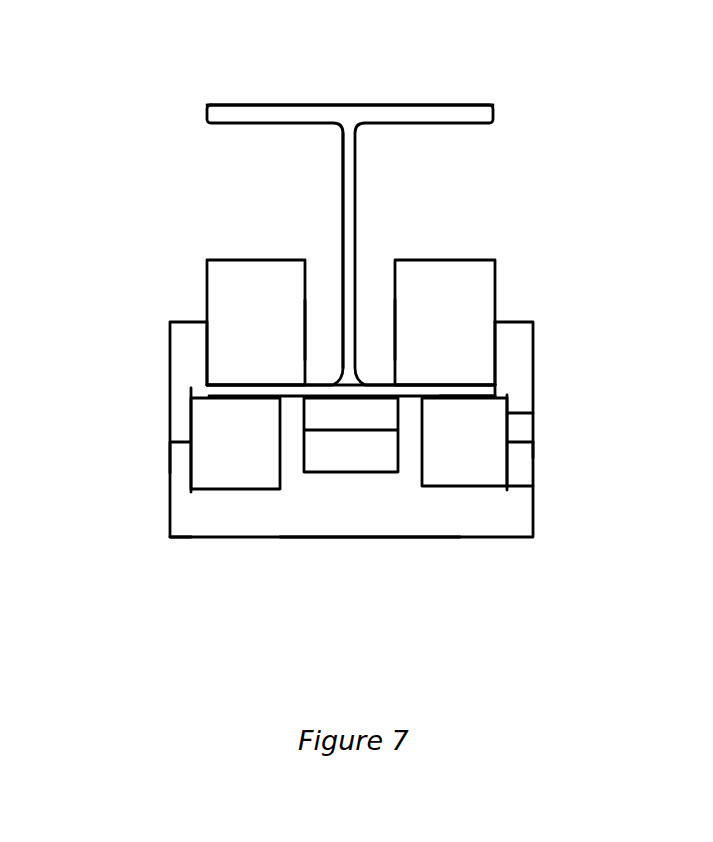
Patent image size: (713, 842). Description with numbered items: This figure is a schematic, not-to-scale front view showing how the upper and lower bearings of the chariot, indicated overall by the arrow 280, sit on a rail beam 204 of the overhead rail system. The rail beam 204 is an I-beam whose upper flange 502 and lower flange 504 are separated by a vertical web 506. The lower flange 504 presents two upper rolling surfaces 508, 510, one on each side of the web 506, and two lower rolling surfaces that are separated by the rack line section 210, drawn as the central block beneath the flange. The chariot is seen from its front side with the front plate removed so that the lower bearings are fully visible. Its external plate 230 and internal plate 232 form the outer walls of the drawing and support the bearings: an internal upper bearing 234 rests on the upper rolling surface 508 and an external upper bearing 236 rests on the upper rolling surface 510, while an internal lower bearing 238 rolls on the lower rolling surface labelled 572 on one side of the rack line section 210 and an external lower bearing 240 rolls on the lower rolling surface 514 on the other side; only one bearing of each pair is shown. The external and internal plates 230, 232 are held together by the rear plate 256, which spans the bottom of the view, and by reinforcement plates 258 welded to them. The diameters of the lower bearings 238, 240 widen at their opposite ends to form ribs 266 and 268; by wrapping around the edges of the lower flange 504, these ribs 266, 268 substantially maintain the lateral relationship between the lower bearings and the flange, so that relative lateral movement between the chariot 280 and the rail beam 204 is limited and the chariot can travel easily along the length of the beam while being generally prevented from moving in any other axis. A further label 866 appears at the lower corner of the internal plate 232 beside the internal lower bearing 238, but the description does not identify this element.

The rail beam 204 is at (437, 106).
The upper flange 502 is at (276, 107).
The web 506 is at (352, 187).
The upper rolling surface 508 is at (320, 372).
The upper rolling surface 510 is at (375, 372).
The internal plate 232 is at (190, 352).
The external plate 230 is at (518, 358).
The internal upper bearings 234 is at (232, 296).
The external upper bearings 236 is at (455, 288).
The rib 266 is at (200, 407).
The rib 268 is at (507, 413).
The lower flange 504 is at (475, 393).
The internal lower bearings 238 is at (243, 467).
The rack line section 210 is at (348, 452).
The external lower bearings 240 is at (463, 465).
The rear plate 256 is at (380, 515).
The reinforcement plates 258 is at (507, 487).
The left gap 572 is at (243, 400).
The lower rolling surface 514 is at (468, 400).
The left lower corner 866 is at (193, 490).
The assembly 280 is at (580, 280).